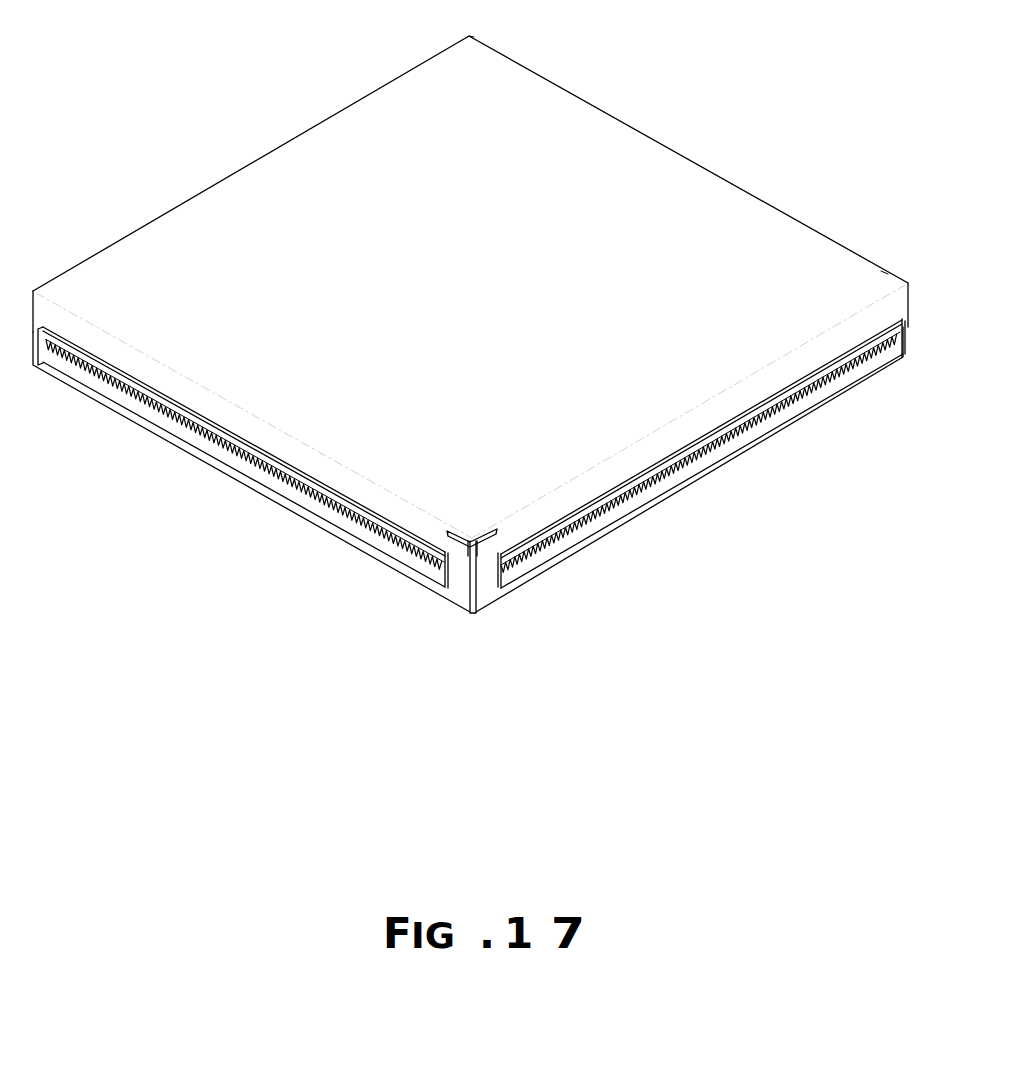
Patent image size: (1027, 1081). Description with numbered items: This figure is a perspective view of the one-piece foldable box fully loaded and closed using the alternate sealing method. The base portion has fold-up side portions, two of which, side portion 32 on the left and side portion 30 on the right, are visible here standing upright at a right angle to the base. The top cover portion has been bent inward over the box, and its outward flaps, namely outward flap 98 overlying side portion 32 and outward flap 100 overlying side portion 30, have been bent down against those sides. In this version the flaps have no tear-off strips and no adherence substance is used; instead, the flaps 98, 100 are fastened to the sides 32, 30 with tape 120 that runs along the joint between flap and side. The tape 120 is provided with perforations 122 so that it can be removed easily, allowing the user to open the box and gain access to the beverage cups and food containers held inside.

The side portion 30 is at (777, 427).
The side portion 32 is at (137, 413).
The outward flap 98 is at (233, 423).
The outward flap 100 is at (663, 450).
The tape 120 is at (310, 502).
The perforations 122 is at (392, 545).